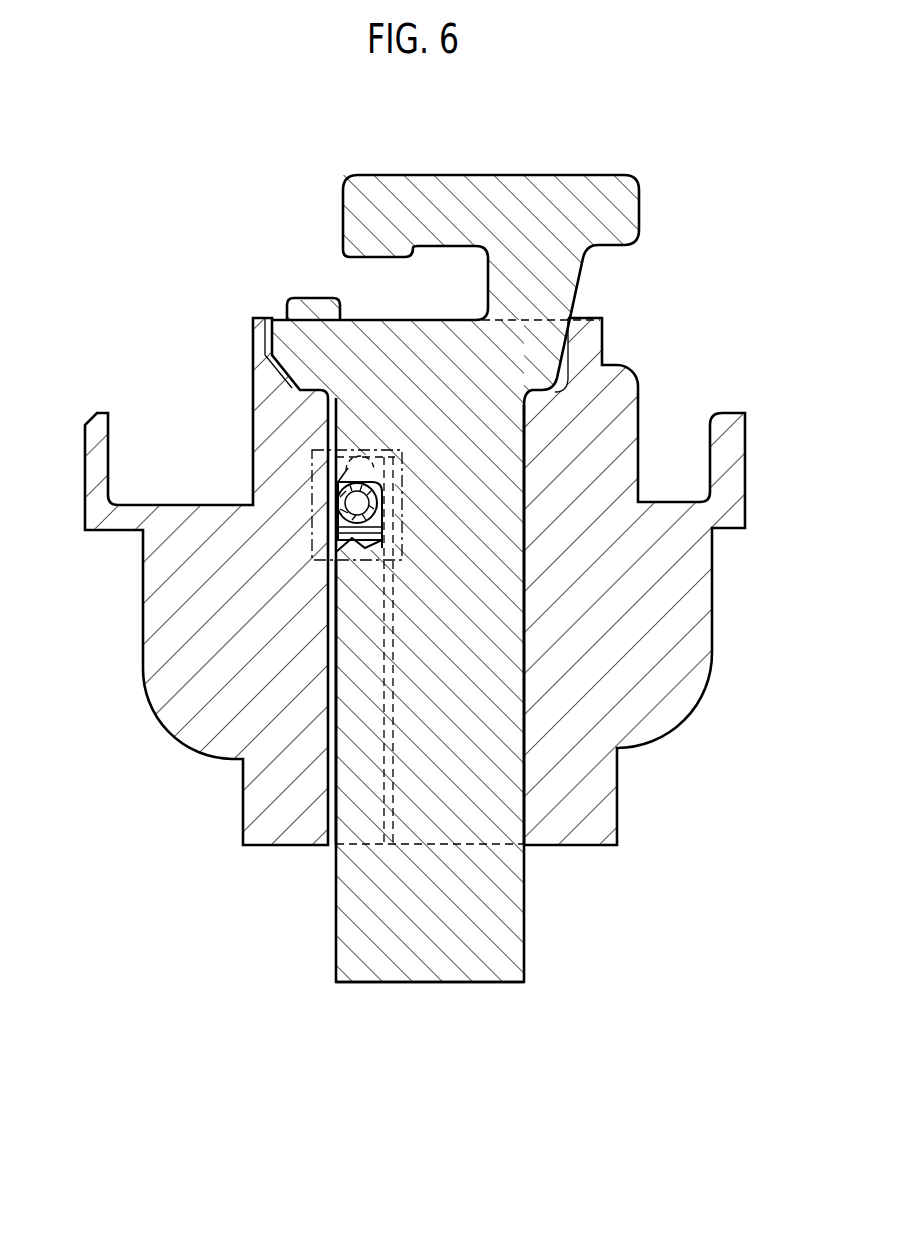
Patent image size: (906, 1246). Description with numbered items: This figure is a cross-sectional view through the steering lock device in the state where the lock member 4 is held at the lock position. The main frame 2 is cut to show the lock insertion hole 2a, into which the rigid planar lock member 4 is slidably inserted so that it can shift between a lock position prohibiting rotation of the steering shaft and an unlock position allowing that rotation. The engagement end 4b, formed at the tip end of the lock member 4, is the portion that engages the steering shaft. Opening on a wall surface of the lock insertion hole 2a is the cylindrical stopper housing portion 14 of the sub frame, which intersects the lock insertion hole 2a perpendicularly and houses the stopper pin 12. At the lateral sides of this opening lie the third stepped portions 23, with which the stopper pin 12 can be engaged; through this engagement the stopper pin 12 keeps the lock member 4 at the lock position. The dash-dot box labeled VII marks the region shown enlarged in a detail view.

The main frame 2 is at (695, 722).
The lock insertion hole 2a is at (524, 632).
The lock member 4 is at (527, 895).
The engagement end 4b is at (335, 548).
The stopper pin 12 is at (350, 495).
The stopper housing portion 14 is at (345, 478).
The third stepped portions 23 is at (383, 565).
The detail view region VII is at (307, 460).